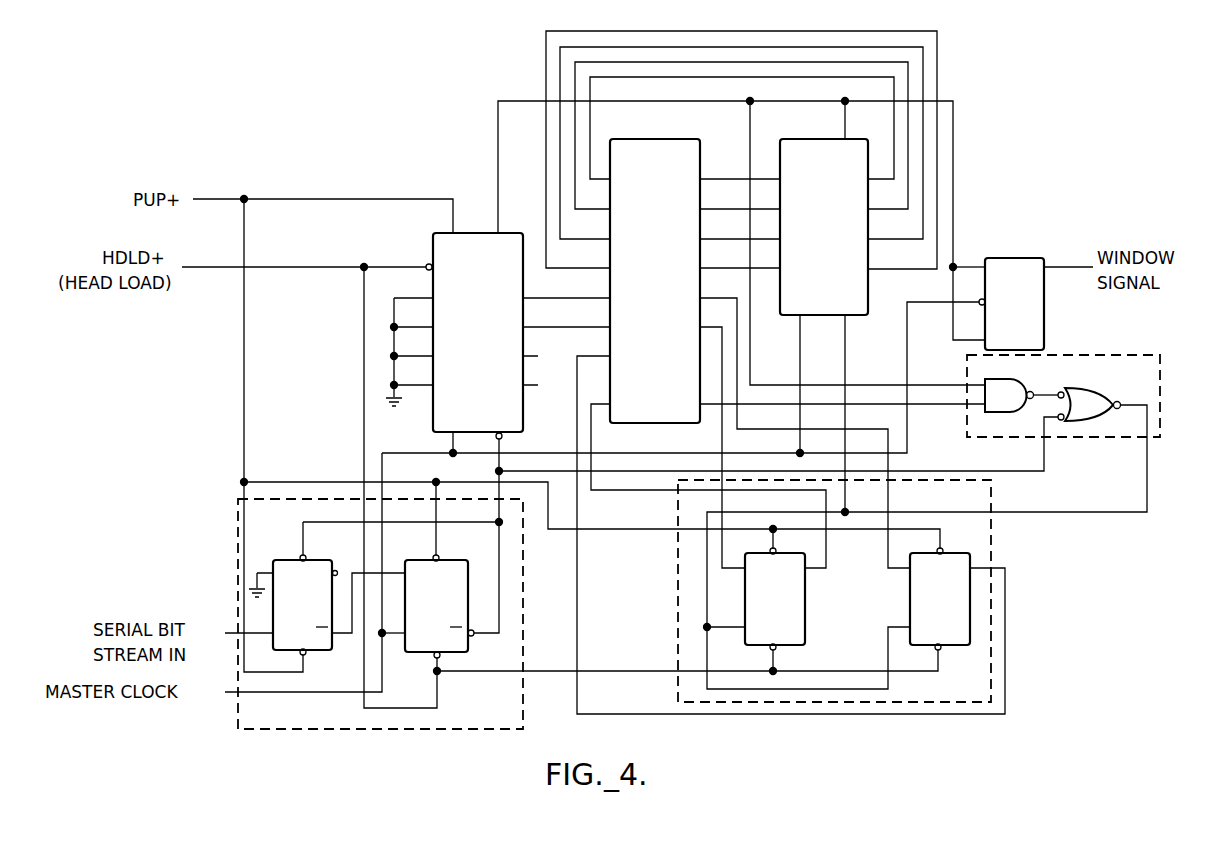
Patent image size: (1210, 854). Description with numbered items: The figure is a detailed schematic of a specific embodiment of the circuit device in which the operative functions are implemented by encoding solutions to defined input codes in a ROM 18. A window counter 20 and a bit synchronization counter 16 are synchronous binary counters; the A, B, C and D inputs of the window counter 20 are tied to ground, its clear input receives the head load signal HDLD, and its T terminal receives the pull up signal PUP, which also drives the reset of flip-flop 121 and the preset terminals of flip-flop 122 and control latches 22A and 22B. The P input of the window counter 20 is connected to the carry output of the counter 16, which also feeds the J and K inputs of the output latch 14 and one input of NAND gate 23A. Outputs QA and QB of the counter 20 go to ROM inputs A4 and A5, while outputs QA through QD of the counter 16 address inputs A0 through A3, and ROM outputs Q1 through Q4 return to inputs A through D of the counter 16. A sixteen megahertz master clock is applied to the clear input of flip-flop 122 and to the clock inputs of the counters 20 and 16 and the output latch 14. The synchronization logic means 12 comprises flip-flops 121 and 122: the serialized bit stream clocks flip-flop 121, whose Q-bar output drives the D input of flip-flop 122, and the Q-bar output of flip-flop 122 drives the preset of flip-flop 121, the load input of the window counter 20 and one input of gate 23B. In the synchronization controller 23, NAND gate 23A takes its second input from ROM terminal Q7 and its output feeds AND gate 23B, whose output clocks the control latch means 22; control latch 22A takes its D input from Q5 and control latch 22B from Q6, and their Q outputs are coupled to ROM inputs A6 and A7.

The synchronization logic means 12 is at (523, 727).
The output latch 14 is at (1015, 258).
The bit synchronization counter 16 is at (858, 139).
The ROM 18 is at (690, 139).
The window counter 20 is at (503, 233).
The control latch means 22 is at (975, 540).
The control latch 22A is at (910, 606).
The control latch 22B is at (805, 590).
The synchronization controller 23 is at (1145, 405).
The NAND gate 23A is at (1010, 379).
The AND gate 23B is at (1086, 388).
The flip-flop 121 is at (315, 560).
The flip-flop 122 is at (450, 560).